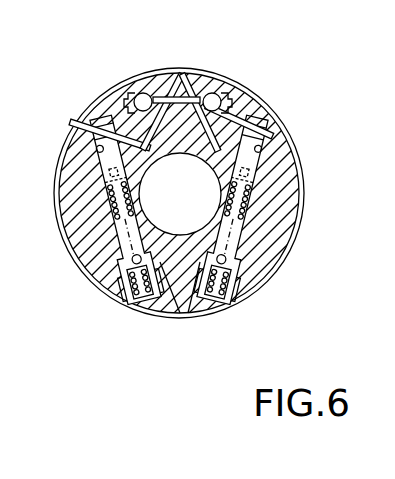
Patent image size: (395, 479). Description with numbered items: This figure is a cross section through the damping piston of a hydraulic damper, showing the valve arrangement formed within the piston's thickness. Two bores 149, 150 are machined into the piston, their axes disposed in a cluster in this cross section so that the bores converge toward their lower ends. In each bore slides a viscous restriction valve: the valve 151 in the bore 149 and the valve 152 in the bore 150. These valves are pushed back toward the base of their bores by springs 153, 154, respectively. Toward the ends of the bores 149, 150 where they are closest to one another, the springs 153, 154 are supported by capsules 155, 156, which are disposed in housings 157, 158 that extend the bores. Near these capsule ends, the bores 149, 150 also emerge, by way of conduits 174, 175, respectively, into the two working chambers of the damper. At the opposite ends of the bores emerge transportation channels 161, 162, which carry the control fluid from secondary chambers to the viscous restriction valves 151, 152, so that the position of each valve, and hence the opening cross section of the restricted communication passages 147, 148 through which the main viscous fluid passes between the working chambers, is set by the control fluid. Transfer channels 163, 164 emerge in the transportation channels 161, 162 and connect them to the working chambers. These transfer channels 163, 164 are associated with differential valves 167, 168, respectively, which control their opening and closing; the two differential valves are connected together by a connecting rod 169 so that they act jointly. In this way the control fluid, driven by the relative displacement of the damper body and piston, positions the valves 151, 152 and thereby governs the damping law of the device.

The communication passage 147 is at (265, 178).
The communication passage 148 is at (92, 182).
The bore 149 is at (246, 214).
The bore 150 is at (112, 221).
The valve 151 is at (255, 140).
The valve 152 is at (95, 144).
The spring 153 is at (258, 282).
The spring 154 is at (128, 278).
The capsule 155 is at (230, 298).
The capsule 156 is at (122, 302).
The housing 157 is at (193, 308).
The housing 158 is at (163, 310).
The transportation channel 161 is at (250, 126).
The transportation channel 162 is at (112, 118).
The transfer channel 163 is at (216, 92).
The transfer channel 164 is at (142, 92).
The differential valve 167 is at (232, 92).
The differential valve 168 is at (127, 98).
The connecting rod 169 is at (172, 72).
The conduit 174 is at (232, 270).
The conduit 175 is at (125, 262).